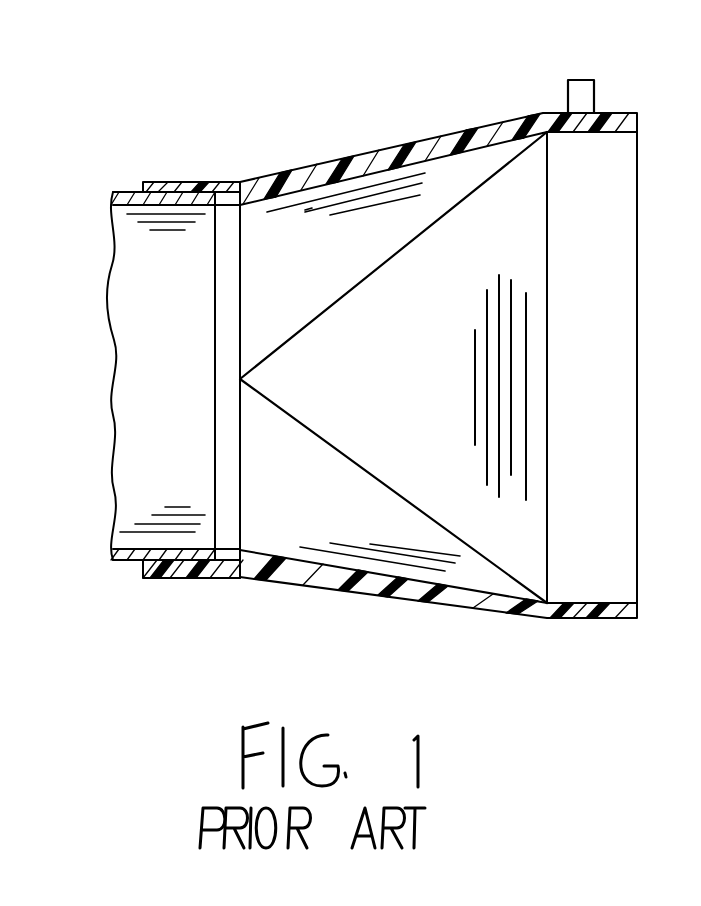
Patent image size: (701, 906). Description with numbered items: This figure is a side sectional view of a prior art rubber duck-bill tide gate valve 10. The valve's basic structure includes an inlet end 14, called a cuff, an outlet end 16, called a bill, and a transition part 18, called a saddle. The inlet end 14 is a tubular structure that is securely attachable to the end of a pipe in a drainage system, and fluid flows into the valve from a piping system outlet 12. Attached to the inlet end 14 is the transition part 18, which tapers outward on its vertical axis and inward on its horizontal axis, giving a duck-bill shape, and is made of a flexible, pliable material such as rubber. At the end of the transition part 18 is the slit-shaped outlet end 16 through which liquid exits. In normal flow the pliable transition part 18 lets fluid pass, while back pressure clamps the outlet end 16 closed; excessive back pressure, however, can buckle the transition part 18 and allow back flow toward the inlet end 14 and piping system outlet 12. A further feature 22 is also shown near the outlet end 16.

The tide gate valve 10 is at (464, 366).
The piping system outlet 12 is at (127, 192).
The inlet end 14 is at (138, 625).
The outlet end 16 is at (643, 680).
The transition part 18 is at (347, 635).
The nozzle 22 is at (566, 92).